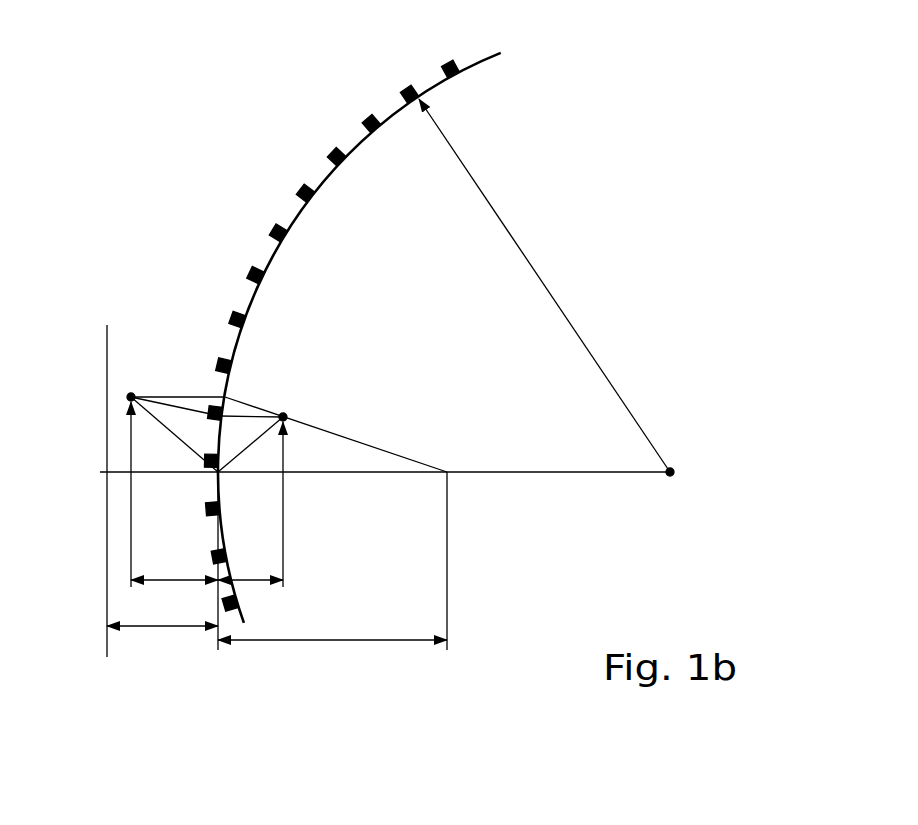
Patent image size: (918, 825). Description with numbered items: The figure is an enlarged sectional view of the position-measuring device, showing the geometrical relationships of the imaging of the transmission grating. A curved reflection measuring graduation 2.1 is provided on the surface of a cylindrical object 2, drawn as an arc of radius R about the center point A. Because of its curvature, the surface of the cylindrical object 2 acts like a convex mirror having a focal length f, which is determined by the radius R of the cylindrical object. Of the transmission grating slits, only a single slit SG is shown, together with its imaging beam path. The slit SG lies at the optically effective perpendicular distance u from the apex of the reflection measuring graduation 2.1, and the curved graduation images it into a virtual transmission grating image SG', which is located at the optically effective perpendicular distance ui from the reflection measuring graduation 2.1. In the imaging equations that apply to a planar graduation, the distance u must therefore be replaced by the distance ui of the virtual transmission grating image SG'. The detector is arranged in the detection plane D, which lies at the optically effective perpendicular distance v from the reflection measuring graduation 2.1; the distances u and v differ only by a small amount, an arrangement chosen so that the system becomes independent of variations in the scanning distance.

The cylindrical object 2 is at (608, 136).
The reflection measuring graduation 2.1 is at (332, 154).
The radius of the cylindrical object R is at (537, 272).
The center of curvature A is at (676, 472).
The detection plane D is at (107, 362).
The transmission grating slit SG is at (176, 459).
The transmission grating image SG' is at (332, 479).
The optically effective perpendicular distance between the transmission grating and u is at (174, 563).
The optically effective perpendicular distance between the transmission grating imag ui is at (250, 560).
The optically effective perpendicular distance between the reflection measuring grad v is at (162, 610).
The focal length of the curved object surface f is at (332, 624).